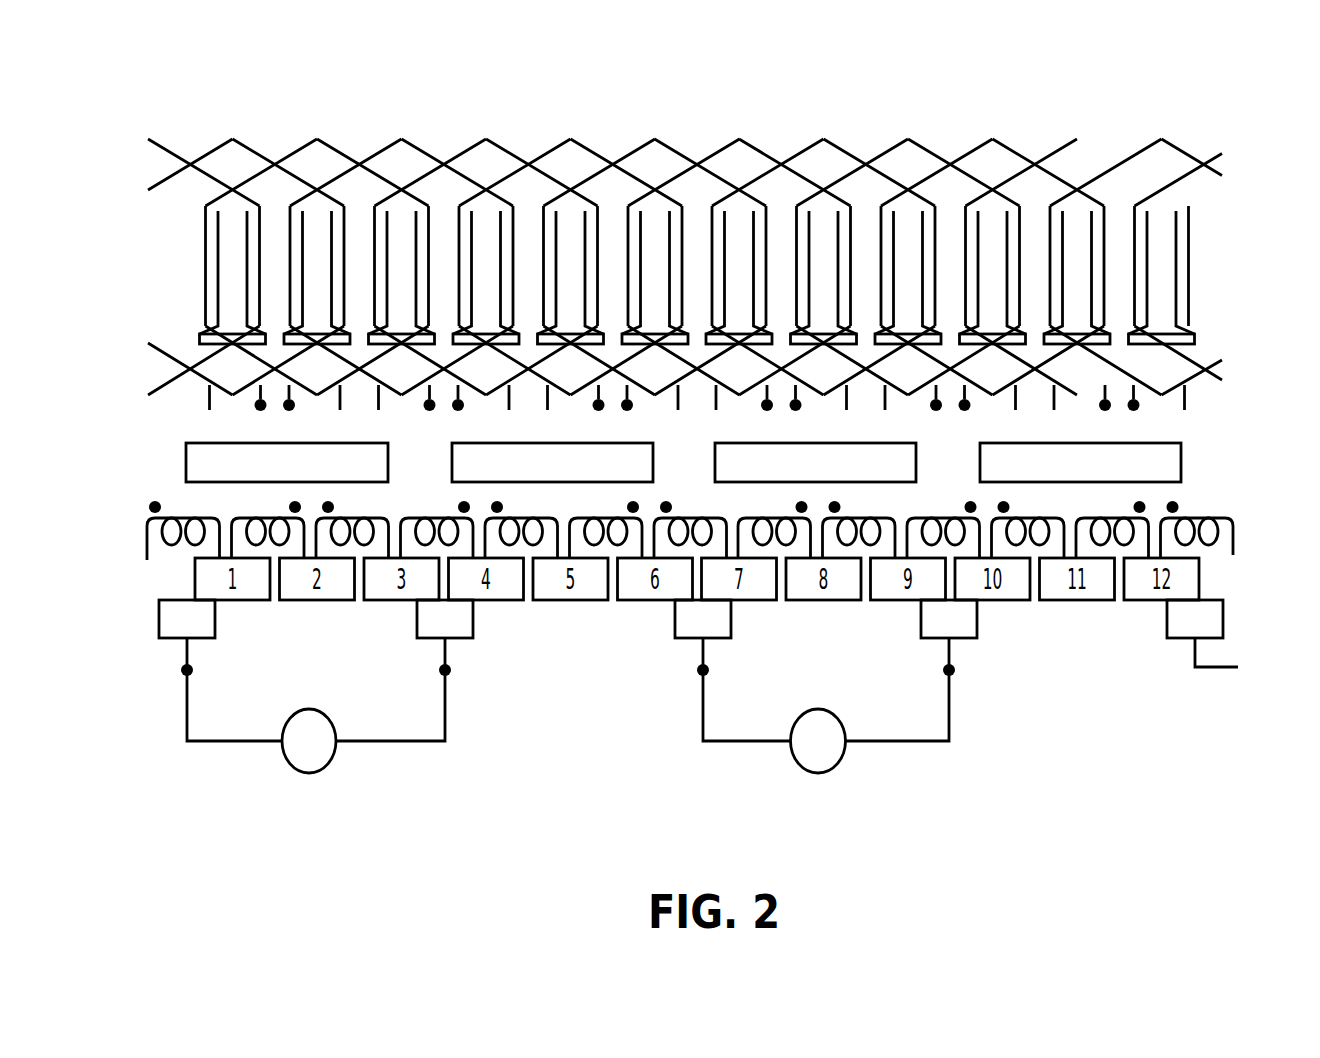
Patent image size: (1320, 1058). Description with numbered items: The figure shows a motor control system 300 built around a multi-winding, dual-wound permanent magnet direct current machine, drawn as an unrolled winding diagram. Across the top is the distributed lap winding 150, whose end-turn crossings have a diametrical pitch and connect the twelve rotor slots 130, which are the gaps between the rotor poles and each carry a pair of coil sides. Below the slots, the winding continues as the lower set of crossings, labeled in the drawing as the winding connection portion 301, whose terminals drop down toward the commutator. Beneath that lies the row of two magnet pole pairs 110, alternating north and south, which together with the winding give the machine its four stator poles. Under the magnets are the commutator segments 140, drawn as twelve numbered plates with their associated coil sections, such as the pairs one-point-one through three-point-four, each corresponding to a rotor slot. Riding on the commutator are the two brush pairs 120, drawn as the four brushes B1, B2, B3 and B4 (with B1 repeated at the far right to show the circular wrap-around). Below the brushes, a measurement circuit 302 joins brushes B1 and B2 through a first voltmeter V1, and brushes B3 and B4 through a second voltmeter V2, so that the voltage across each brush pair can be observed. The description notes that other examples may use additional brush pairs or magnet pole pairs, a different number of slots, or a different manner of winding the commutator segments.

The magnet pole pair 110 is at (161, 422).
The brush pairs 120 is at (692, 626).
The rotor slots 130 is at (172, 225).
The commutator segments 140 is at (1240, 505).
The distributed lap winding 150 is at (470, 152).
The motor control system 300 is at (160, 98).
The winding connection diagram 301 is at (117, 152).
The voltage measurement circuit 302 is at (700, 747).
The brush B1 is at (1263, 635).
The brush B2 is at (473, 618).
The brush B3 is at (731, 618).
The brush B4 is at (977, 618).
The voltmeter V1 is at (309, 741).
The voltmeter V2 is at (818, 741).